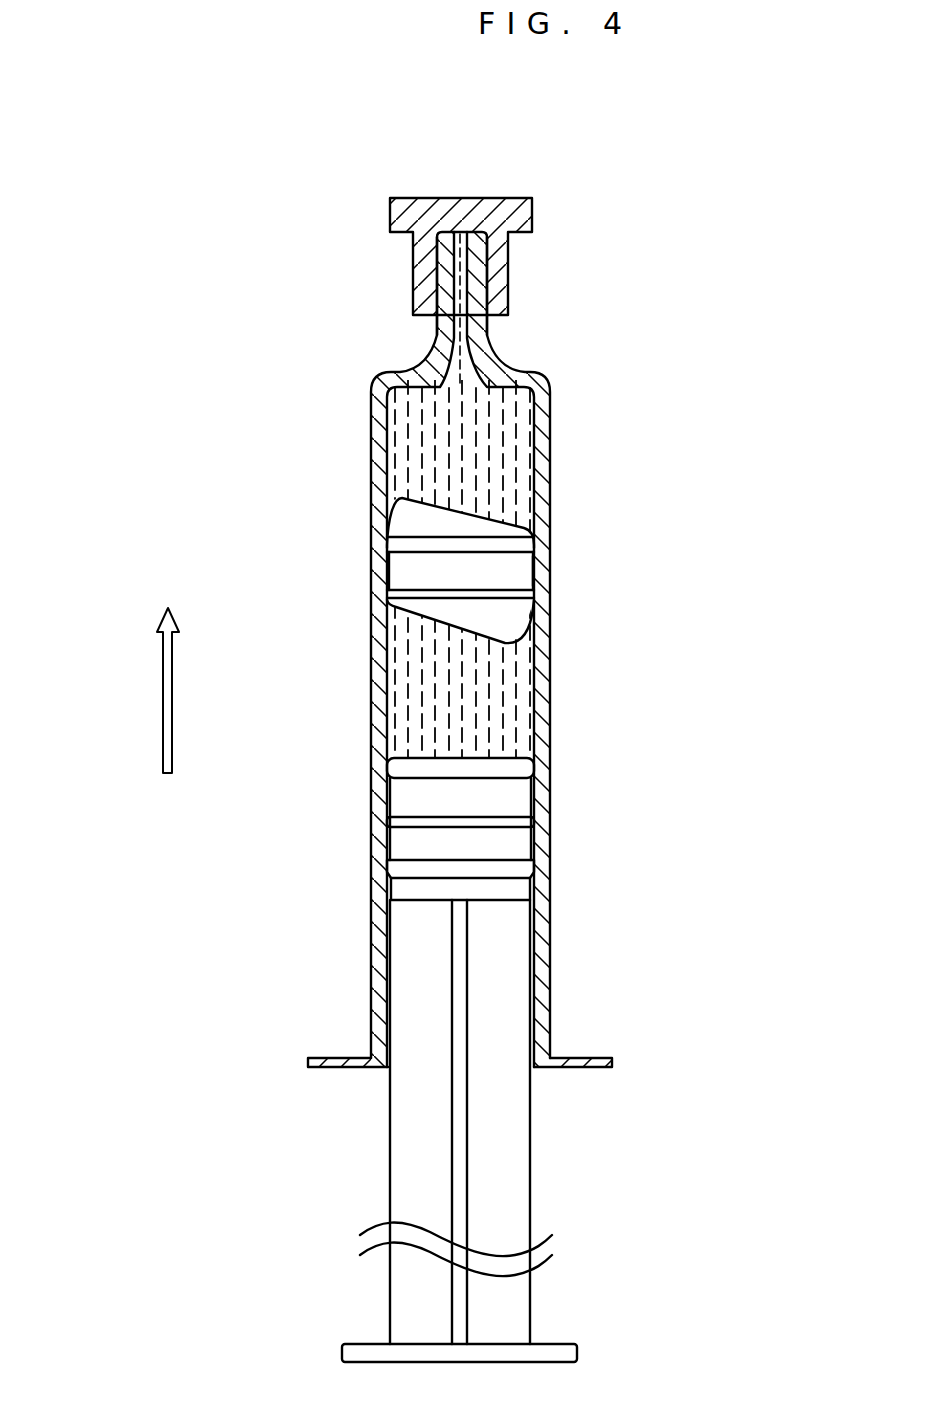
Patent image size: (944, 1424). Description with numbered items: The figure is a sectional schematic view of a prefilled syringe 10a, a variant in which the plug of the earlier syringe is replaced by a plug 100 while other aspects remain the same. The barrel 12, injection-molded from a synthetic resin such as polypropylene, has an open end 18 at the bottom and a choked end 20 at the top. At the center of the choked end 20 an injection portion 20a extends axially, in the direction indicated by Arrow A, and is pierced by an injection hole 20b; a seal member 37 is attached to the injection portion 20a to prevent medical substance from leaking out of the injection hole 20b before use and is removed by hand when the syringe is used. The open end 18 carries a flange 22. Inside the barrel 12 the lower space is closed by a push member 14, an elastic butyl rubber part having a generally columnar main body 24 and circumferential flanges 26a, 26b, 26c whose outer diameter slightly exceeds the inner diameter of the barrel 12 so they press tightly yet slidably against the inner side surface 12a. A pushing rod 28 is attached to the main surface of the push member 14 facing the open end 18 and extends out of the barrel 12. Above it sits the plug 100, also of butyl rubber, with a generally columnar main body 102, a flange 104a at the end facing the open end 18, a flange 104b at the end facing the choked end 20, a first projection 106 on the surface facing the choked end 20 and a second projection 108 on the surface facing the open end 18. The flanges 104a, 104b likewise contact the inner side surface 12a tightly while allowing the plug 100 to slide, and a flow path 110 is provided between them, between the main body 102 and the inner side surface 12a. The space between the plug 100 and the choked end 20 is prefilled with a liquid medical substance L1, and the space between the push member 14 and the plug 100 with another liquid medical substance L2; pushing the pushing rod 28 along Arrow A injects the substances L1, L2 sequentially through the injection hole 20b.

The syringe 10a is at (145, 131).
The barrel 12 is at (454, 649).
The inner side surface 12a is at (530, 465).
The push member 14 is at (544, 819).
The open end 18 is at (388, 1067).
The choked end 20 is at (432, 309).
The injection portion 20a is at (490, 340).
The injection hole 20b is at (457, 295).
The flange 22 is at (345, 1057).
The main body 24 is at (523, 793).
The flange 26a is at (511, 875).
The flange 26b is at (530, 827).
The flange 26c is at (530, 773).
The pushing rod 28 is at (532, 1165).
The seal member 37 is at (487, 198).
The plug 100 is at (405, 581).
The main body 102 is at (398, 571).
The flange 104a is at (398, 597).
The flange 104b is at (398, 547).
The projection 106 is at (405, 523).
The projection 108 is at (410, 610).
The flow path 110 is at (518, 575).
The liquid medical substance L1 is at (402, 437).
The liquid medical substance L2 is at (402, 706).
The Arrow A is at (172, 698).